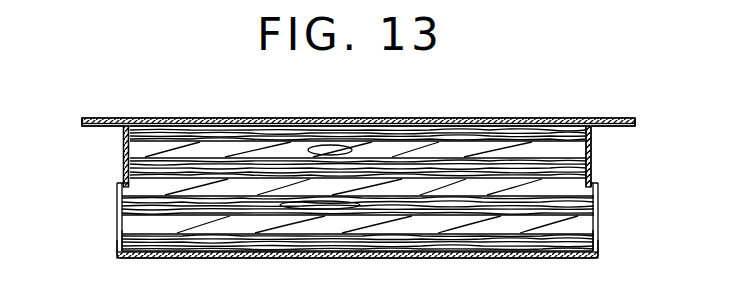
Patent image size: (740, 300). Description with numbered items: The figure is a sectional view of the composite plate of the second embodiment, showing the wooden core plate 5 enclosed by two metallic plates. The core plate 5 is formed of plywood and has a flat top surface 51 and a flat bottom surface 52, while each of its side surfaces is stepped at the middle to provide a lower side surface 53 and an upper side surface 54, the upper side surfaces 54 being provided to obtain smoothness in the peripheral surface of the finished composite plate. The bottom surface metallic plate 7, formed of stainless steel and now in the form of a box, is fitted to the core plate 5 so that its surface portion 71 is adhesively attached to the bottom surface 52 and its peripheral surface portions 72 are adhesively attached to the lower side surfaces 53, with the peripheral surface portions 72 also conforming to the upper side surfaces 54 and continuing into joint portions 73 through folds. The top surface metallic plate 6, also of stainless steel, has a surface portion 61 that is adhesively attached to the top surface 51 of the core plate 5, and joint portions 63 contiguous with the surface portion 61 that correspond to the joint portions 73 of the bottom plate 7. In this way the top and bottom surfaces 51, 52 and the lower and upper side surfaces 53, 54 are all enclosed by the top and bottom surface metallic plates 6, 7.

The core plate 5 is at (212, 153).
The top surface metallic plate 6 is at (255, 118).
The bottom surface metallic plate 7 is at (193, 259).
The top surface 51 is at (503, 118).
The bottom surface 52 is at (300, 258).
The lower side surface 53 is at (118, 230).
The upper side surface 54 is at (120, 170).
The surface portion 61 is at (403, 118).
The joint portions 63 is at (93, 118).
The surface portion 71 is at (448, 258).
The peripheral surface portions 72 is at (118, 208).
The joint portions 73 is at (122, 138).